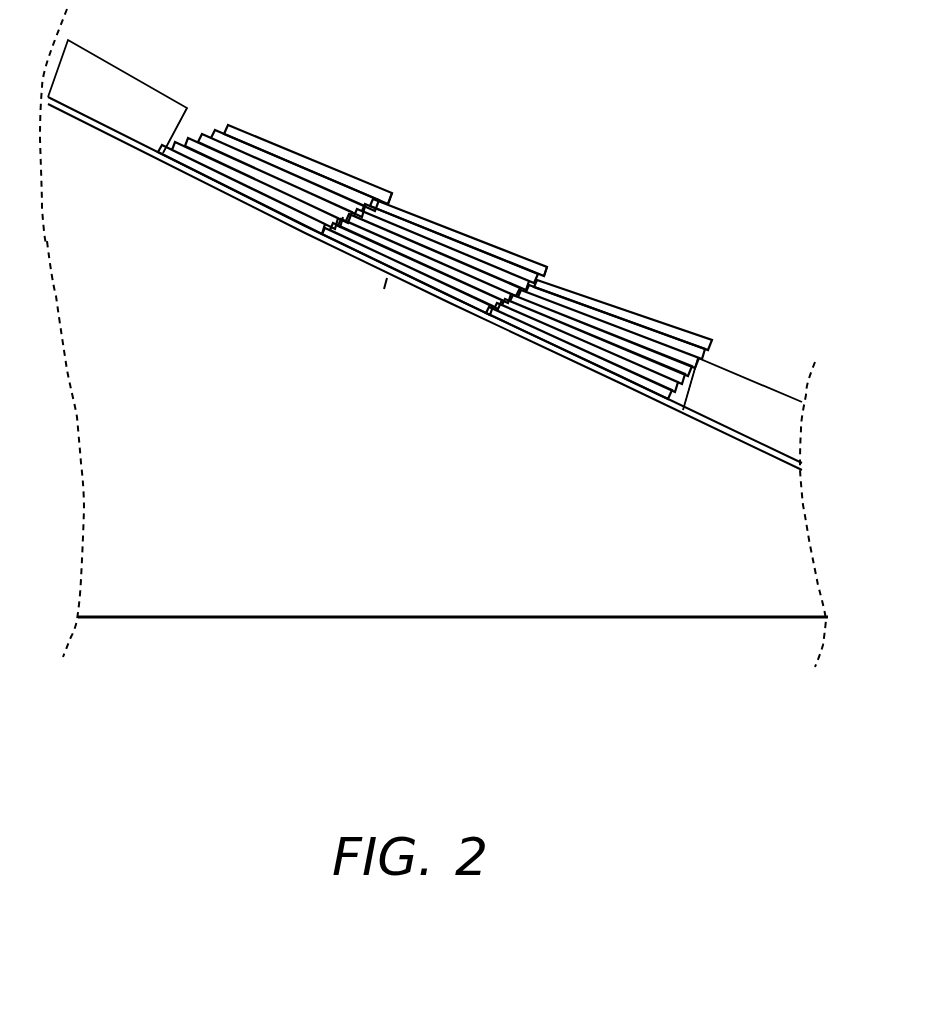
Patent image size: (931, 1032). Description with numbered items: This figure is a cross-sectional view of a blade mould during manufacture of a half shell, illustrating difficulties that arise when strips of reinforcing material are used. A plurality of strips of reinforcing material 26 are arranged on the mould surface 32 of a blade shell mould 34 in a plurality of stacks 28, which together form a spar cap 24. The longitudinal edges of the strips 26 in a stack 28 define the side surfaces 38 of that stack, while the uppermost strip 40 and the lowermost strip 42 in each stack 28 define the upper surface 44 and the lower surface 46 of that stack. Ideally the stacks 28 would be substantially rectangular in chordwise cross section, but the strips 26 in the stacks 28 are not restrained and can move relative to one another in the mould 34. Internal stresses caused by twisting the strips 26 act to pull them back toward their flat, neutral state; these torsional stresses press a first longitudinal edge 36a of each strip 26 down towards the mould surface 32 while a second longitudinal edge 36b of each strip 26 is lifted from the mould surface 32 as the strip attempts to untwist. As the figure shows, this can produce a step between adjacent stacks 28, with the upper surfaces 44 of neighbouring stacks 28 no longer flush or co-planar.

The spar cap 24 is at (435, 268).
The strips of reinforcing material 26 is at (290, 196).
The stacks 28 is at (307, 130).
The mould surface 32 is at (121, 143).
The blade shell mould 34 is at (463, 566).
The first longitudinal edge 36a is at (200, 126).
The second longitudinal edge 36b is at (715, 345).
The side surfaces 38 is at (187, 121).
The uppermost strip 40 is at (420, 206).
The lowermost strip 42 is at (343, 258).
The upper surface 44 is at (522, 260).
The lower surface 46 is at (384, 282).